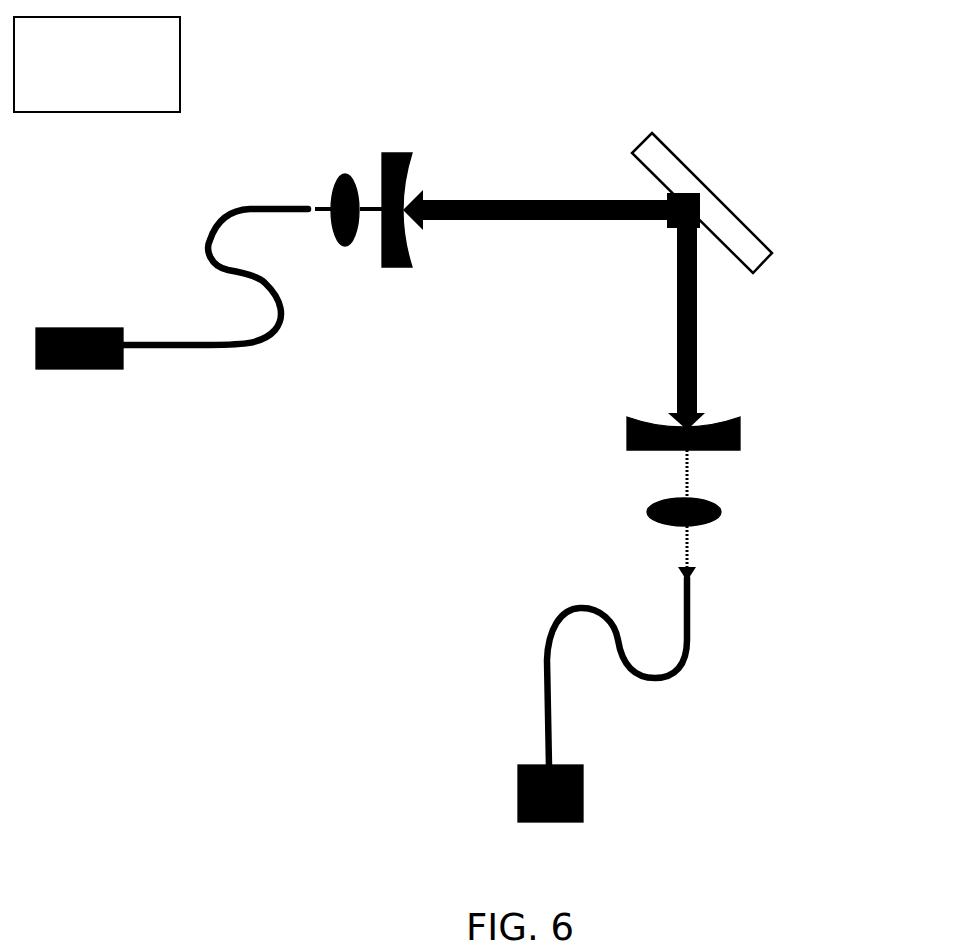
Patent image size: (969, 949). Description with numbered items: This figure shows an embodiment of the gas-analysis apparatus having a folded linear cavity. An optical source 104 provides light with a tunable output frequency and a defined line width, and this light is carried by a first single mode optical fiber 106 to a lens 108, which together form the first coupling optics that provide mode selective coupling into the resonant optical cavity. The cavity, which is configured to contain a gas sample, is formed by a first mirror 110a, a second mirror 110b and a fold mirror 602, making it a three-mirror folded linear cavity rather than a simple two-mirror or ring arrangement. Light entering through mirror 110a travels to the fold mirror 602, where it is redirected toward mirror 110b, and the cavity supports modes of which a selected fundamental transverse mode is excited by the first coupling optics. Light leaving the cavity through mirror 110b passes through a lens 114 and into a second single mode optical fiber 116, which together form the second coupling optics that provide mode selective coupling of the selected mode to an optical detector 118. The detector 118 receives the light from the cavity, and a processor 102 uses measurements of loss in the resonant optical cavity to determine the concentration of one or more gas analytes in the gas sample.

The processor 102 is at (73, 78).
The optical source 104 is at (65, 370).
The first single mode optical fiber 106 is at (193, 350).
The lens 108 is at (345, 183).
The mirror 110a is at (397, 260).
The fold mirror 602 is at (712, 212).
The mirror 110b is at (732, 432).
The lens 114 is at (715, 513).
The second single mode optical fiber 116 is at (687, 655).
The optical detector 118 is at (585, 788).